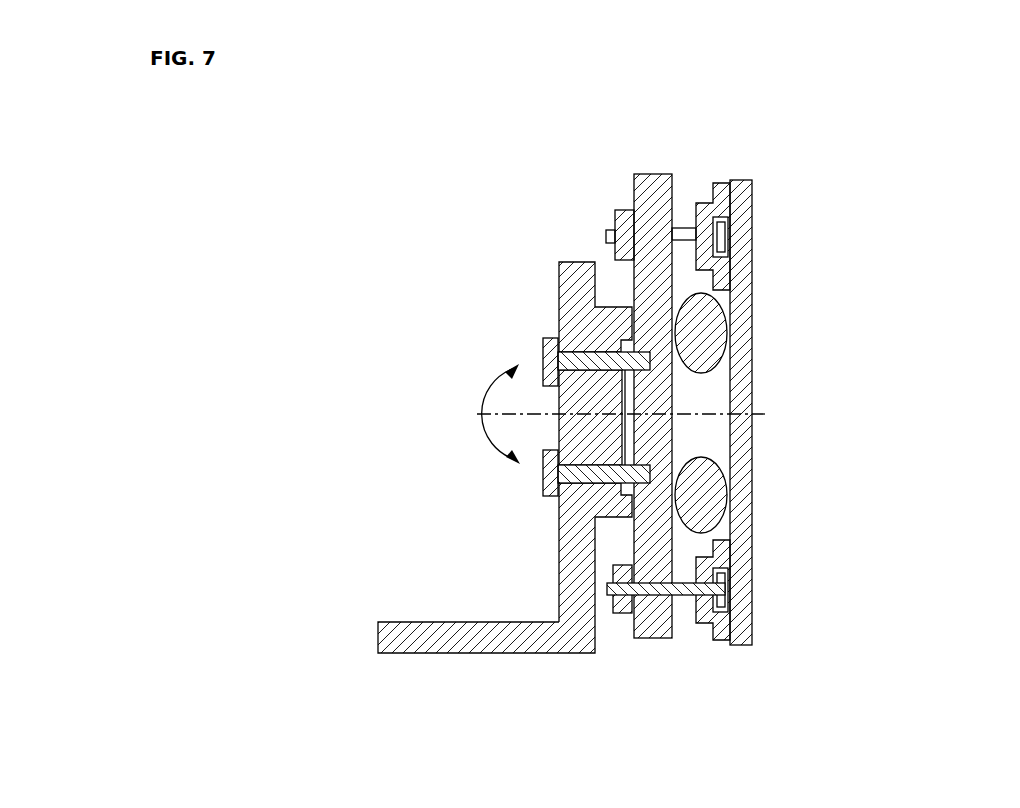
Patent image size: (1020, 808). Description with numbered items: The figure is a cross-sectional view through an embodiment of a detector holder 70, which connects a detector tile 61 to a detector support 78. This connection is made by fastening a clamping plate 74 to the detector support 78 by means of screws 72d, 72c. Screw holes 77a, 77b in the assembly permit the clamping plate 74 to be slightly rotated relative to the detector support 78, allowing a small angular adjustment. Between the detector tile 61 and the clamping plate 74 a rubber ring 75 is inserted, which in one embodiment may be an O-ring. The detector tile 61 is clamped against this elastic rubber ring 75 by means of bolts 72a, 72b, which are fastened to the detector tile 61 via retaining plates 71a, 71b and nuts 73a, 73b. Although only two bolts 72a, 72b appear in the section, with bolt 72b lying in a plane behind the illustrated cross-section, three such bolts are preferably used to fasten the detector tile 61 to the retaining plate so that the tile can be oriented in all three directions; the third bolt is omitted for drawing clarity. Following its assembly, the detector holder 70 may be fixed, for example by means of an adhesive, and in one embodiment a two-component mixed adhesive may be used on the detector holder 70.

The detector holder 70 is at (452, 150).
The detector tile 61 is at (740, 400).
The retaining plate 71a is at (716, 625).
The retaining plate 71b is at (713, 205).
The bolt 72a is at (727, 586).
The bolt 72b is at (730, 236).
The screw 72c is at (545, 478).
The screw 72d is at (553, 360).
The nut 73a is at (613, 613).
The nut 73b is at (613, 212).
The clamping plate 74 is at (652, 622).
The rubber ring 75 is at (728, 498).
The screw hole 77a is at (552, 502).
The screw hole 77b is at (560, 337).
The detector support 78 is at (560, 618).